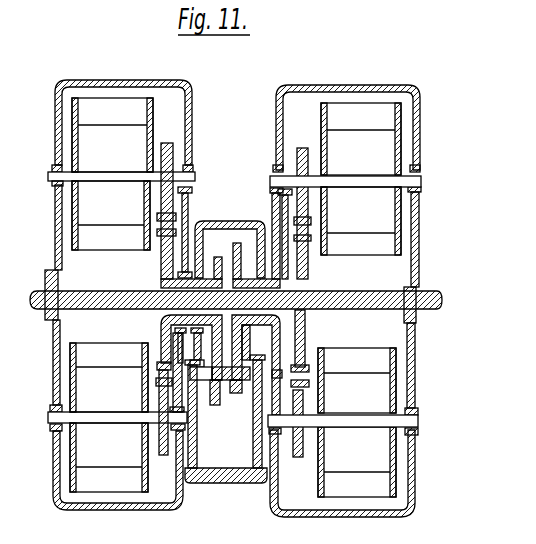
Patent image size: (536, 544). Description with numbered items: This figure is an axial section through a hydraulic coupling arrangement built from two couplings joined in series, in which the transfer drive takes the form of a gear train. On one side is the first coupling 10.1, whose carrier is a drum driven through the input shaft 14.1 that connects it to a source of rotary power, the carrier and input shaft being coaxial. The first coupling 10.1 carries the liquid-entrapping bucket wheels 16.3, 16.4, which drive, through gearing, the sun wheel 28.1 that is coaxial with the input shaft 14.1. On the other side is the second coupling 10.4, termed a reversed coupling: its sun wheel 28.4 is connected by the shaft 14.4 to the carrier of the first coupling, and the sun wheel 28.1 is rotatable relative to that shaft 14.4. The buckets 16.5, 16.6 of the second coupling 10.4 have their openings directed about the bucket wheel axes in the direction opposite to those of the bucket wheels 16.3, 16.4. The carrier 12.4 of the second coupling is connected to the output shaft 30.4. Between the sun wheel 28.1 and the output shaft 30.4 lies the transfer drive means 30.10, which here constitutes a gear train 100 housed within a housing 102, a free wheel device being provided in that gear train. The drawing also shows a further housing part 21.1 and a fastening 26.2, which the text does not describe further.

The first coupling 10.1 is at (192, 163).
The second coupling 10.4 is at (421, 170).
The carrier of the second coupling 12.4 is at (412, 478).
The input shaft 14.1 is at (36, 310).
The shaft 14.4 is at (134, 291).
The bucket wheel 16.3 is at (199, 111).
The bucket wheel 16.4 is at (150, 124).
The bucket 16.5 is at (436, 118).
The bucket 16.6 is at (402, 131).
The lower left housing 21.1 is at (146, 505).
The bolt fastening 26.2 is at (172, 216).
The sun wheel 28.1 is at (161, 333).
The sun wheel 28.4 is at (308, 329).
The output shaft 30.4 is at (430, 296).
The transfer drive means 30.10 is at (237, 485).
The gear train 100 is at (228, 389).
The housing 102 is at (197, 486).